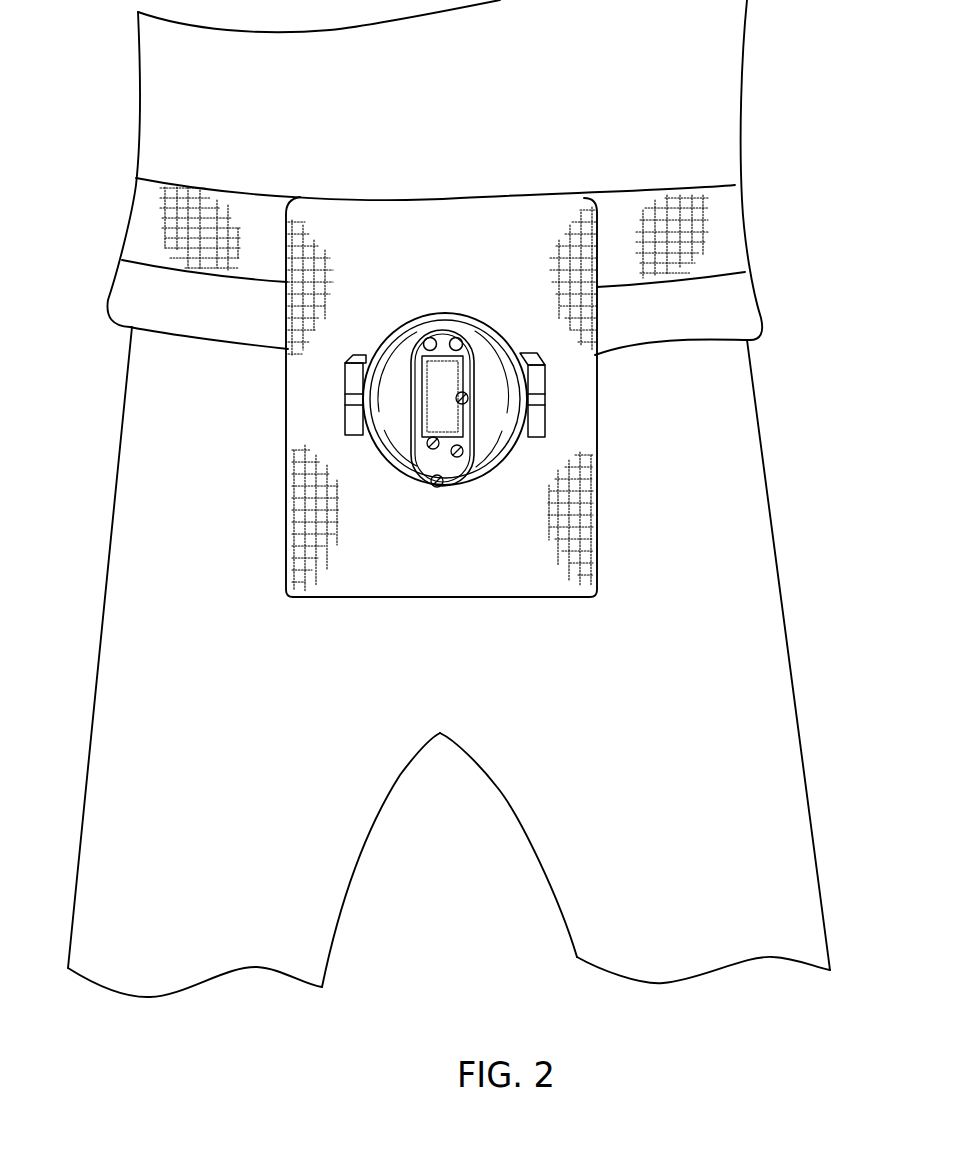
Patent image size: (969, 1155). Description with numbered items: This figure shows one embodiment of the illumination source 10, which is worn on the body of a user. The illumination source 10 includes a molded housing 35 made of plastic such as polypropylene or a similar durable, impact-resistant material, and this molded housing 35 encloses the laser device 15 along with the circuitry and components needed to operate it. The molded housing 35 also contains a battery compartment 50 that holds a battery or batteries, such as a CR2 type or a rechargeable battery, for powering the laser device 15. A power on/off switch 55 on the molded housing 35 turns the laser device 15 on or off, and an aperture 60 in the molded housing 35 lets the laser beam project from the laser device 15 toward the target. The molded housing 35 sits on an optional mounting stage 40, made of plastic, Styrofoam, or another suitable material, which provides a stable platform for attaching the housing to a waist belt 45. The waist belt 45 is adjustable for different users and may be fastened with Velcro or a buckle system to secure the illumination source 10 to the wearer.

The illumination source 10 is at (528, 160).
The laser device 15 is at (440, 333).
The molded housing 35 is at (386, 410).
The mounting stage 40 is at (508, 404).
The waist belt 45 is at (707, 228).
The battery compartment 50 is at (438, 426).
The power on/off switch 55 is at (467, 337).
The aperture 60 is at (422, 332).